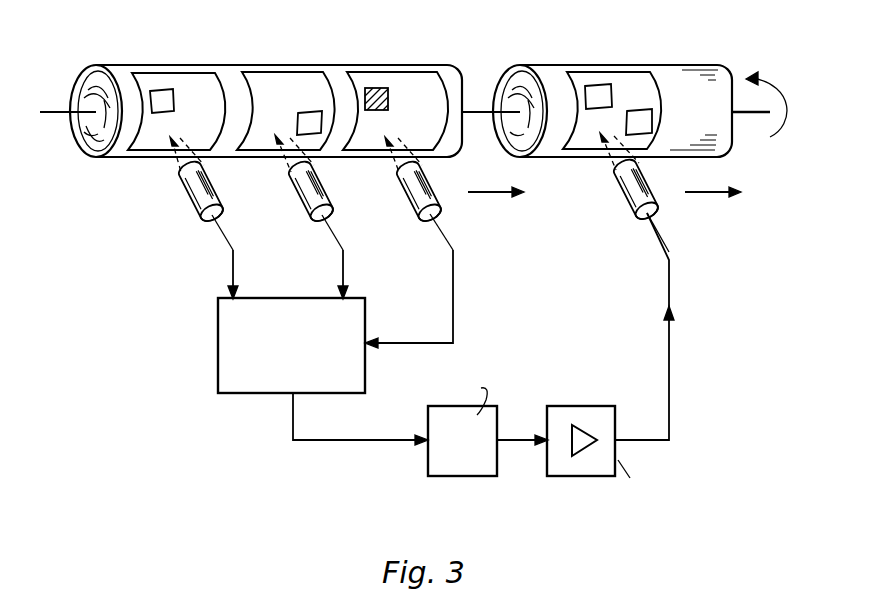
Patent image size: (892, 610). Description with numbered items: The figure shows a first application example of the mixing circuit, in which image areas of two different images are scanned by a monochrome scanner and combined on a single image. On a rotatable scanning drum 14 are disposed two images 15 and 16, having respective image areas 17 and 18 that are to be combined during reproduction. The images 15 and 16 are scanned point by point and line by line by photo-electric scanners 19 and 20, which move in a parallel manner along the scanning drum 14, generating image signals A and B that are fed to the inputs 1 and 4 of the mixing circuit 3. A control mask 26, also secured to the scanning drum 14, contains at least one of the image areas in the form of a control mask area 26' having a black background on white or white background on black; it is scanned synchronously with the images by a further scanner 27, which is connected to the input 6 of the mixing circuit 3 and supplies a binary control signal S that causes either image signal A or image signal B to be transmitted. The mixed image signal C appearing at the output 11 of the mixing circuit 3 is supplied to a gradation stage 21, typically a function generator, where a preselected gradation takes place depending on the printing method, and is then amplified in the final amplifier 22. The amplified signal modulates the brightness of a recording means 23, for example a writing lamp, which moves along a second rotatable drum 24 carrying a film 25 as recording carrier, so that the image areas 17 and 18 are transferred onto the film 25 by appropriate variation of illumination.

The input of the mixing circuit 1 is at (232, 295).
The mixing circuit 3 is at (236, 347).
The input of the mixing circuit 4 is at (338, 296).
The input of the mixing circuit 6 is at (367, 342).
The output of the mixing circuit 11 is at (292, 395).
The scanning drum 14 is at (87, 148).
The image 15 is at (200, 90).
The image 16 is at (283, 87).
The image area 17 is at (160, 90).
The image area 18 is at (308, 125).
The photo-electric scanner 19 is at (190, 192).
The photo-electric scanner 20 is at (302, 194).
The gradation stage 21 is at (443, 455).
The final amplifier 22 is at (582, 465).
The recording means 23 is at (628, 200).
The second rotatable drum 24 is at (678, 87).
The film 25 is at (622, 88).
The control mask 26 is at (395, 83).
The control mask area 26' is at (360, 63).
The scanner 27 is at (414, 203).